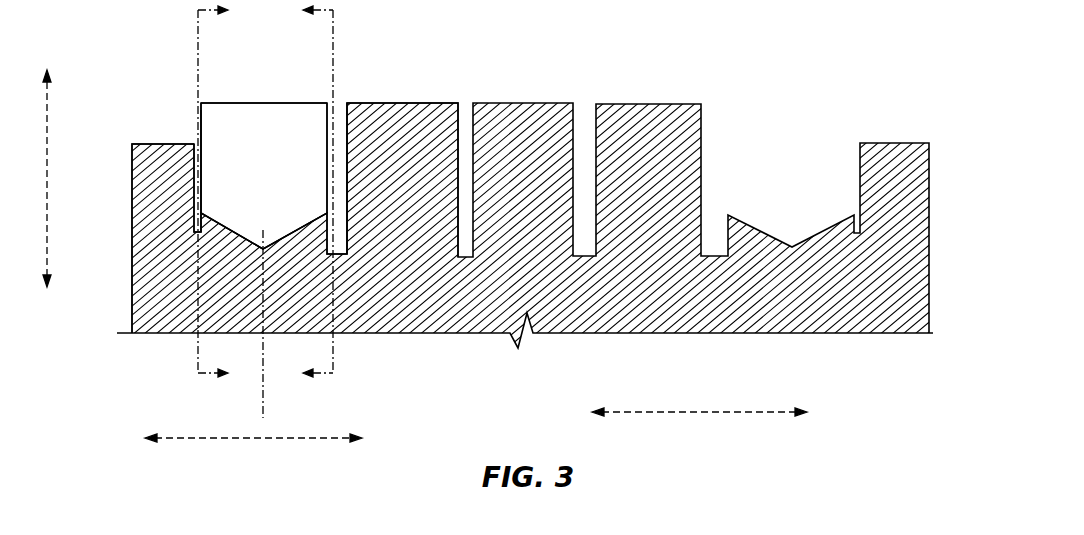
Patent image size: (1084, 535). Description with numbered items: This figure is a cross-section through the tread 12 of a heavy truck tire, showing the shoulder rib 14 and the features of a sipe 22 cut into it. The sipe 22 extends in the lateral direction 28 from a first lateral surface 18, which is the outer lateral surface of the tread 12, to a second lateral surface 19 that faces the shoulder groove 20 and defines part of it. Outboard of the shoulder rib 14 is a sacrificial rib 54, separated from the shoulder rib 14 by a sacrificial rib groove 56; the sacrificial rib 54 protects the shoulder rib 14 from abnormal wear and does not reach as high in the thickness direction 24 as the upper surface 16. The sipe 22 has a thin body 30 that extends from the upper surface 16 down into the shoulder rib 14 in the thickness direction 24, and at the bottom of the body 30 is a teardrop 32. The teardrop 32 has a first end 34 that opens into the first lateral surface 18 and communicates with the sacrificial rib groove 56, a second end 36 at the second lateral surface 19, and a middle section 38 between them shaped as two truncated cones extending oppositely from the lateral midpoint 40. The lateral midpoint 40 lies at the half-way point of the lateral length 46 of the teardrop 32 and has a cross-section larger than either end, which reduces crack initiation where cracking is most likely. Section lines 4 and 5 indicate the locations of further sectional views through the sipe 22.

The tread 12 is at (842, 52).
The shoulder rib 14 is at (253, 113).
The upper surface 16 is at (285, 100).
The first lateral surface 18 is at (200, 108).
The body 30 is at (217, 140).
The shoulder groove 20 is at (337, 108).
The second lateral surface 19 is at (330, 140).
The second end 36 is at (330, 216).
The middle section 38 is at (295, 231).
The teardrop 32 is at (228, 215).
The first end 34 is at (203, 214).
The sipe 22 is at (215, 173).
The sacrificial rib groove 56 is at (196, 172).
The sacrificial rib 54 is at (138, 185).
The thickness direction 24 is at (50, 98).
The lateral length 46 is at (278, 440).
The lateral direction 28 is at (723, 413).
The lateral midpoint 40 is at (263, 390).
The section line 4 is at (224, 193).
The section line 5 is at (309, 193).